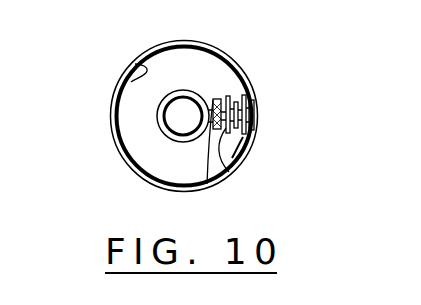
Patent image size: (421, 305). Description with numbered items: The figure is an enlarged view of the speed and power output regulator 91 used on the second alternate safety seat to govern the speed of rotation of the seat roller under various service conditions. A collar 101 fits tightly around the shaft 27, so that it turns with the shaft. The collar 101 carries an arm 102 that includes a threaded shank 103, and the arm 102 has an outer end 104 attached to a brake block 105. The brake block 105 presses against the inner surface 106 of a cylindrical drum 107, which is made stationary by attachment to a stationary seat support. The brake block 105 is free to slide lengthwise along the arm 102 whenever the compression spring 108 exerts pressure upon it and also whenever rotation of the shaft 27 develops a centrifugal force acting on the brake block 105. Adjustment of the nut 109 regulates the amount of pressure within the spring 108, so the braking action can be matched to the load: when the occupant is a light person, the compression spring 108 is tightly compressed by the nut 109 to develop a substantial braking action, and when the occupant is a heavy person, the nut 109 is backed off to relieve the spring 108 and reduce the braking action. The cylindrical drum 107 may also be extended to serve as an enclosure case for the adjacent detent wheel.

The cylindrical drum 107 is at (150, 50).
The speed and power output regulator 91 is at (173, 40).
The inner surface 106 is at (137, 63).
The collar 101 is at (160, 99).
The shaft 27 is at (180, 117).
The arm 102 is at (215, 98).
The nut 109 is at (220, 97).
The outer end 104 is at (248, 88).
The threaded shank 103 is at (214, 188).
The compression spring 108 is at (224, 172).
The brake block 105 is at (244, 158).